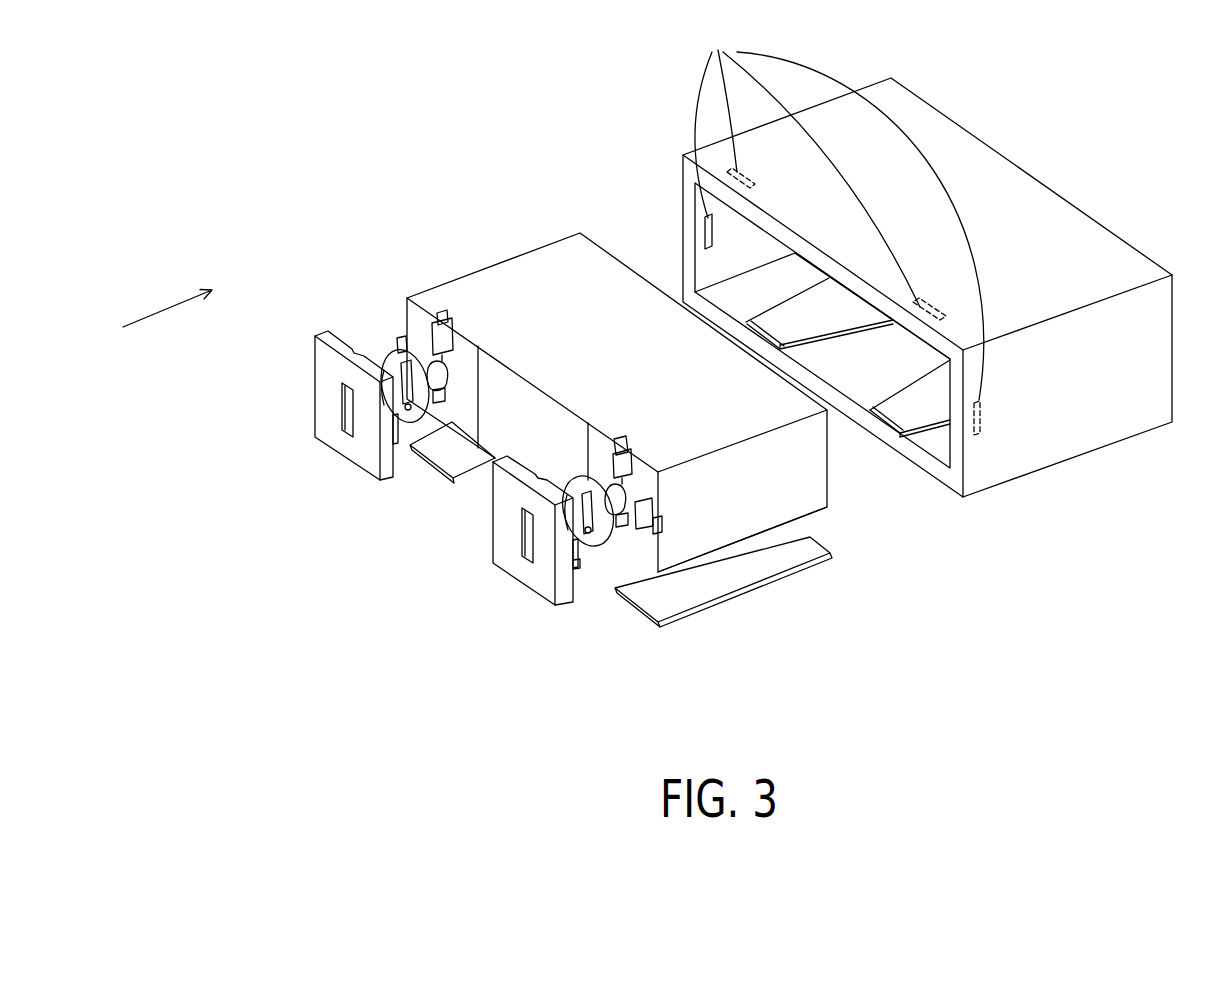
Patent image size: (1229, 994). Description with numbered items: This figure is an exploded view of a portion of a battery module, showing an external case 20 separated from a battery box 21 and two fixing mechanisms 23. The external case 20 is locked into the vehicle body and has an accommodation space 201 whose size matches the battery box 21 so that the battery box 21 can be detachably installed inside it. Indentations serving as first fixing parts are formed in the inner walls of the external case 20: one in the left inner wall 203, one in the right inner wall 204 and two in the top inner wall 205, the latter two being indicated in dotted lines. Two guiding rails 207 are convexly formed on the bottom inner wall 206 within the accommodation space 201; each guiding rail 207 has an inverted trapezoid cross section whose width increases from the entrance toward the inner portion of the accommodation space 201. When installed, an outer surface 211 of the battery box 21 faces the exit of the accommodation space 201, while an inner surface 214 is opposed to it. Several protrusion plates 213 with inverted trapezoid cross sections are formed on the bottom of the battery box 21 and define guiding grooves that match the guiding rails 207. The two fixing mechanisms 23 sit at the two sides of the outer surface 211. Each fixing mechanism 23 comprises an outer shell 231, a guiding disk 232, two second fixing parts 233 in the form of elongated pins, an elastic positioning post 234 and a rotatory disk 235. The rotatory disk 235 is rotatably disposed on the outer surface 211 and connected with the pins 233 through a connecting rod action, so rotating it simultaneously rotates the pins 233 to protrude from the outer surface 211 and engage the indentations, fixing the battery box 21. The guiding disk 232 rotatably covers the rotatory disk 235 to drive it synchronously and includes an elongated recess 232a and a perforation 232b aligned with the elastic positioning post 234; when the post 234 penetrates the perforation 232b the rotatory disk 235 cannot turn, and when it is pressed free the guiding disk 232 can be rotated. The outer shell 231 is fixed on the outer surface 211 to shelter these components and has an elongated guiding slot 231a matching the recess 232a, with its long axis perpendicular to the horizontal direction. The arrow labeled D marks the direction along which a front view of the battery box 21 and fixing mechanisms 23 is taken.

The external case 20 is at (1124, 216).
The accommodation space 201 is at (732, 253).
The left inner wall 203 is at (697, 200).
The right inner wall 204 is at (948, 412).
The top inner wall 205 is at (918, 340).
The bottom inner wall 206 is at (862, 370).
The guiding rail 207 is at (893, 417).
The battery box 21 is at (528, 268).
The outer surface 211 is at (527, 398).
The protrusion plate 213 is at (816, 545).
The inner surface 214 is at (828, 472).
The fixing mechanism 23 is at (289, 434).
The outer shell 231 is at (327, 356).
The guiding slot 231a is at (350, 398).
The guiding disk 232 is at (395, 362).
The recess 232a is at (407, 408).
The perforation 232b is at (408, 392).
The second fixing part 233 is at (447, 362).
The elastic positioning post 234 is at (424, 410).
The rotatory disk 235 is at (400, 348).
The direction D is at (167, 323).